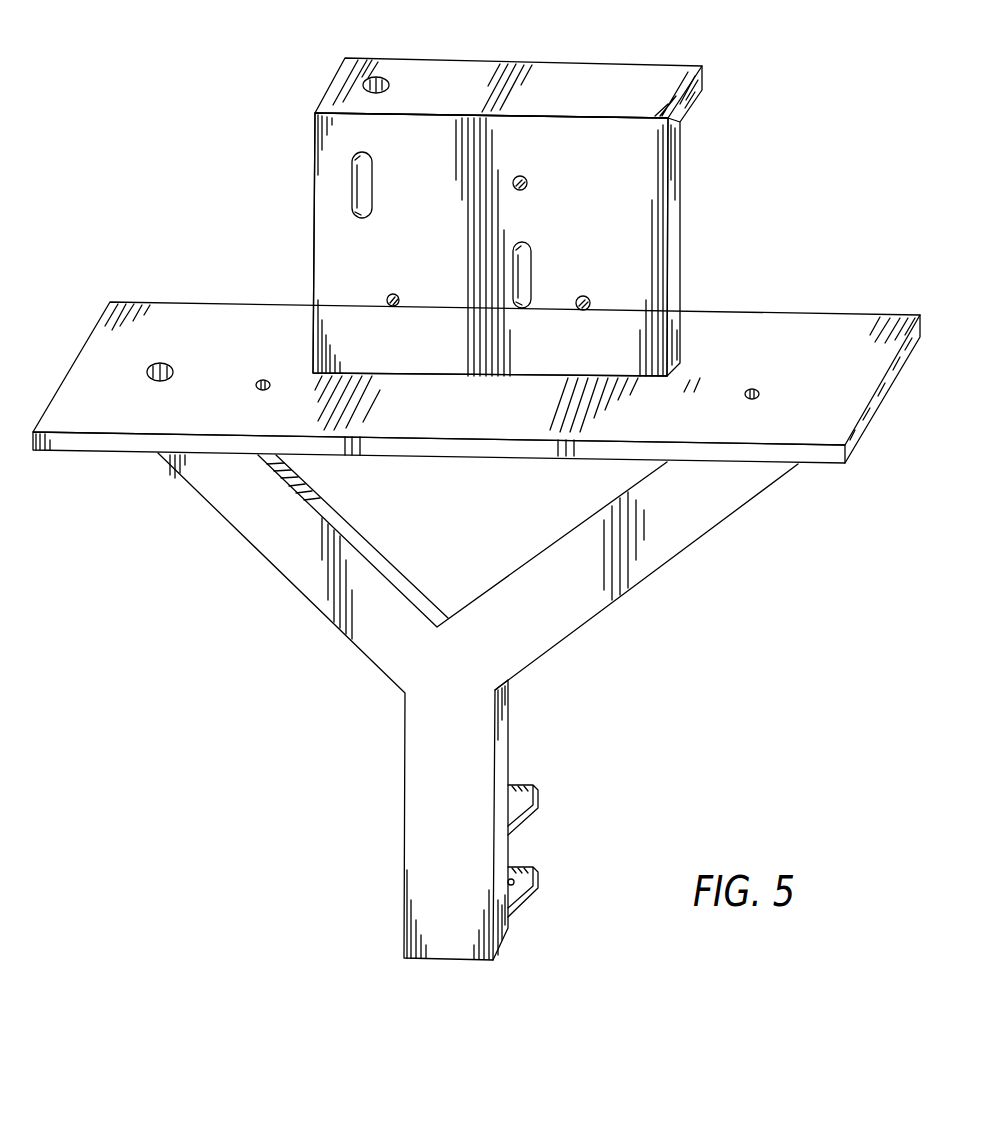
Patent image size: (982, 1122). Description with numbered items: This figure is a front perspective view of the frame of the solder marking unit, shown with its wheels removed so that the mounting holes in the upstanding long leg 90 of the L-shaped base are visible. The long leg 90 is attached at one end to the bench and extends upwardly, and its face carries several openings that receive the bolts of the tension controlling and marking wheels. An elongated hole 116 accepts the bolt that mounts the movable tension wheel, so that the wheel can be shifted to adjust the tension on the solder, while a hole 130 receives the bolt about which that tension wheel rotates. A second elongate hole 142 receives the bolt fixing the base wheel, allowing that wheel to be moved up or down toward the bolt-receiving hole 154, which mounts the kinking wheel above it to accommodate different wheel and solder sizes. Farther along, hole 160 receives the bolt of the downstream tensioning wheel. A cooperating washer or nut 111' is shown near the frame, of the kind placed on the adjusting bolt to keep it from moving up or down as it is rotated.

The nut 111' is at (507, 192).
The long leg 90 is at (311, 165).
The elongated hole 116 is at (375, 183).
The hole 142 is at (535, 248).
The bolt-receiving hole 154 is at (529, 183).
The hole 130 is at (395, 308).
The hole 160 is at (590, 299).